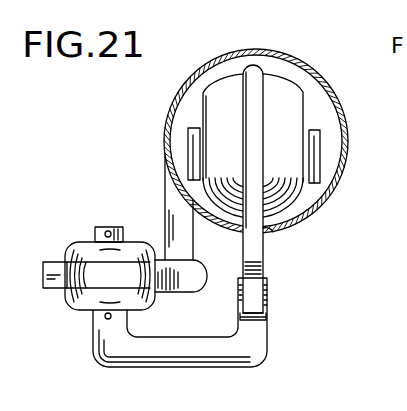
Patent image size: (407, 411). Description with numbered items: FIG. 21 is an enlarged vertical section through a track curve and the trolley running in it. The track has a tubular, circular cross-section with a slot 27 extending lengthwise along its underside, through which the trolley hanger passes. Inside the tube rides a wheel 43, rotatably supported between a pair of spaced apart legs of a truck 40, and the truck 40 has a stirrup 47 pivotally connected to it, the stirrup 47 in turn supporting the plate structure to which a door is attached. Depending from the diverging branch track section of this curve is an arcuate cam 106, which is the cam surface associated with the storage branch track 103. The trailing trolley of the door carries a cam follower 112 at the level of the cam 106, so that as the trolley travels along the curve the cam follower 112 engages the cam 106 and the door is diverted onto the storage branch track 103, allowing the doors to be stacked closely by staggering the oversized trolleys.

The storage branch track 103 is at (340, 110).
The wheel 43 is at (292, 118).
The truck 40 is at (312, 141).
The slot 27 is at (270, 233).
The stirrup 47 is at (263, 270).
The arcuate cam 106 is at (196, 292).
The cam follower 112 is at (73, 243).